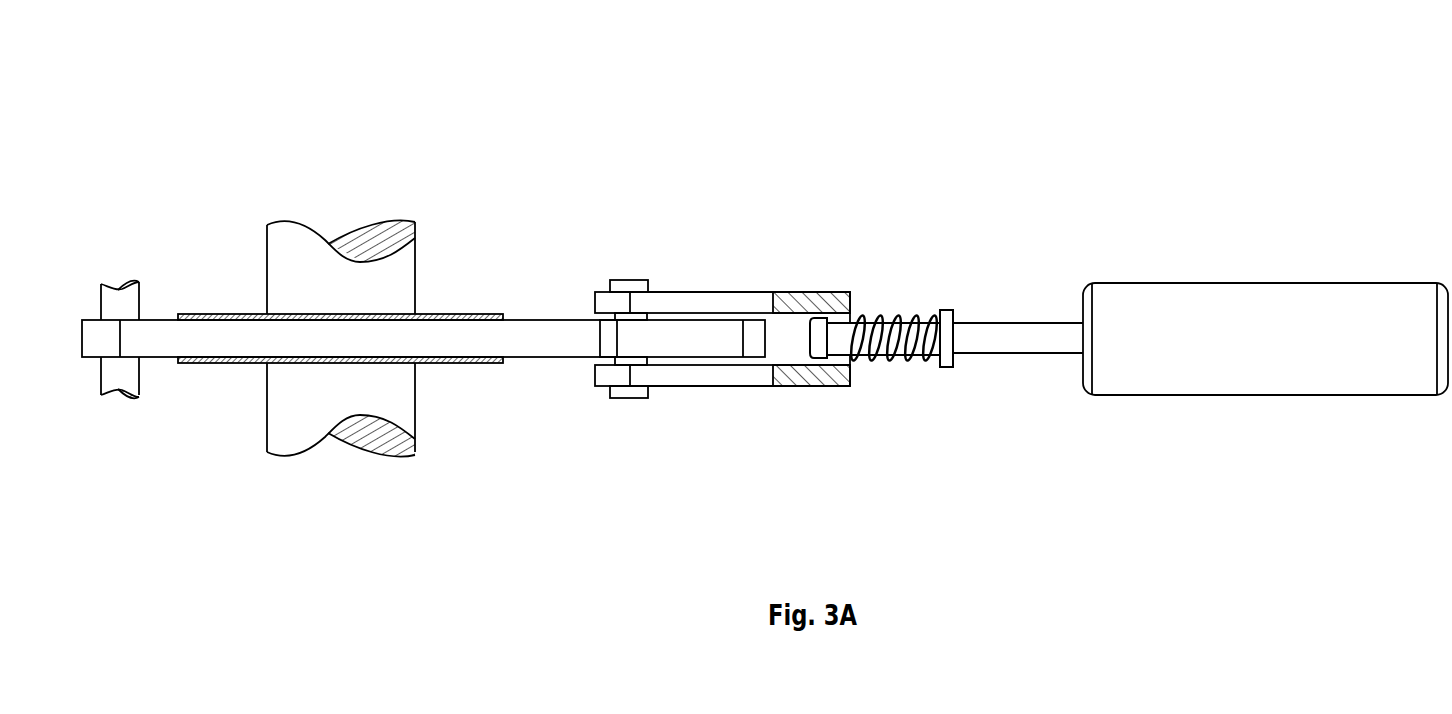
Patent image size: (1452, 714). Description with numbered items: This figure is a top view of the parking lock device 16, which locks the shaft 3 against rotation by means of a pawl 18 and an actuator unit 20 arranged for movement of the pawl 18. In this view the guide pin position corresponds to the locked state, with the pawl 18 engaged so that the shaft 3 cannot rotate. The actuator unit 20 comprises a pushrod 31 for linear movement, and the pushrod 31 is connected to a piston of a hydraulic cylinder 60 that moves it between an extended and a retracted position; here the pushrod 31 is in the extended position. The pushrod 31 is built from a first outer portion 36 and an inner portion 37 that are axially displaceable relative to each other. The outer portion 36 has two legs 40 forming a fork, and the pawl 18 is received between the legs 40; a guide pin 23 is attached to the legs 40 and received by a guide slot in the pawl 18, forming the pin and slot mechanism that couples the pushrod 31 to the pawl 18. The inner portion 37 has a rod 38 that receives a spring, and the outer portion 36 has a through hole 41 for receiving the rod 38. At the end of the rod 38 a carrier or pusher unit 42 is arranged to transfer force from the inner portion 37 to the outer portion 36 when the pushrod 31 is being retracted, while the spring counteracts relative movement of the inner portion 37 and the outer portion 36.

The parking lock device 16 is at (660, 92).
The shaft 3 is at (337, 285).
The pawl 18 is at (550, 338).
The guide pin 23 is at (625, 398).
The first outer portion 36 is at (658, 253).
The legs 40 is at (732, 300).
The pusher unit 42 is at (803, 335).
The through hole 41 is at (838, 386).
The pushrod 31 is at (863, 253).
The inner portion 37 is at (913, 248).
The rod 38 is at (916, 362).
The actuator unit 20 is at (1133, 230).
The hydraulic cylinder 60 is at (1280, 345).